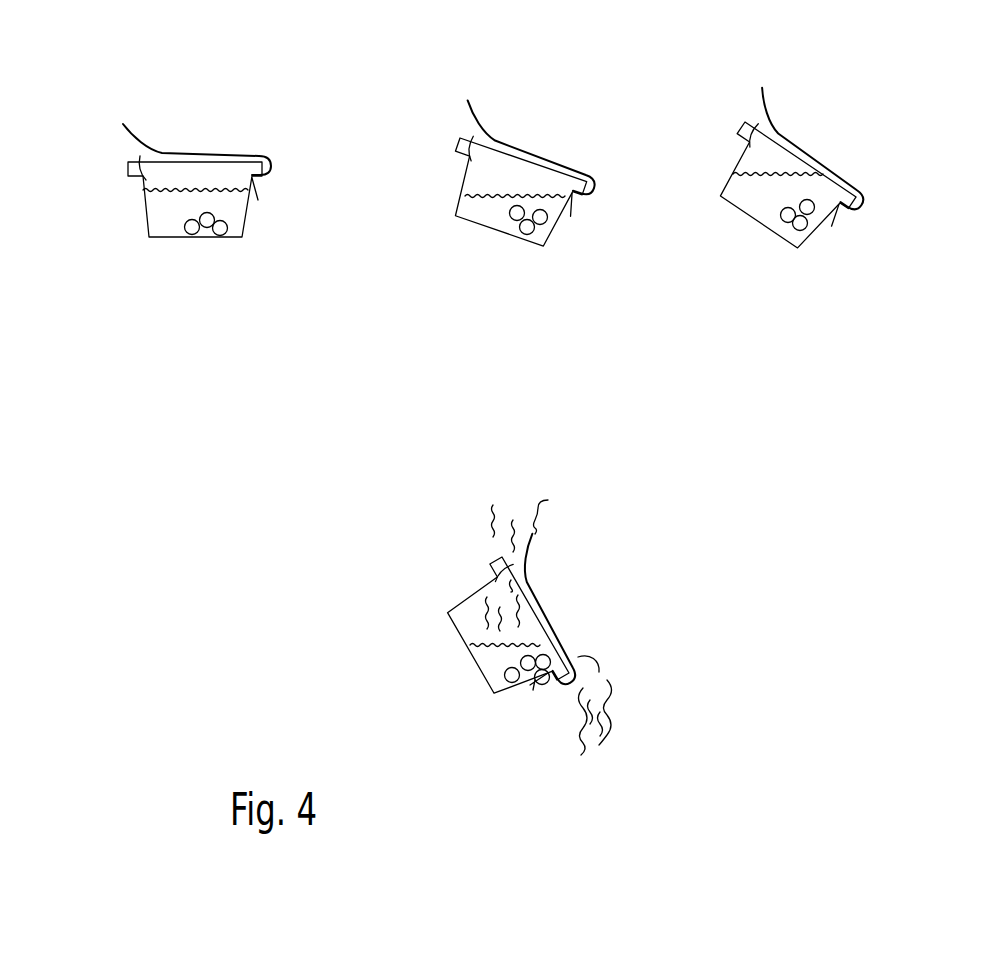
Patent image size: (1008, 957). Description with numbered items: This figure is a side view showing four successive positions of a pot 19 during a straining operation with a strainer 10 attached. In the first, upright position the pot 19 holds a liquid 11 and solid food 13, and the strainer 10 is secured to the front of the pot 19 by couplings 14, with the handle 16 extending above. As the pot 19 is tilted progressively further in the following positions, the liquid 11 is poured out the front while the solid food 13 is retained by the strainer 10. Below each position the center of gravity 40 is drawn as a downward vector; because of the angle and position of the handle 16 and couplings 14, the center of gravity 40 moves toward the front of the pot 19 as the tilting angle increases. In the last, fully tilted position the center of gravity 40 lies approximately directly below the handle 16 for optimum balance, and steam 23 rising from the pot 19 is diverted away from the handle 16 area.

The strainer 10 is at (196, 119).
The liquid 11 is at (160, 222).
The solid food 13 is at (483, 225).
The couplings 14 is at (268, 163).
The handle 16 is at (140, 130).
The pot 19 is at (116, 142).
The steam 23 is at (490, 508).
The center of gravity 40 is at (198, 263).